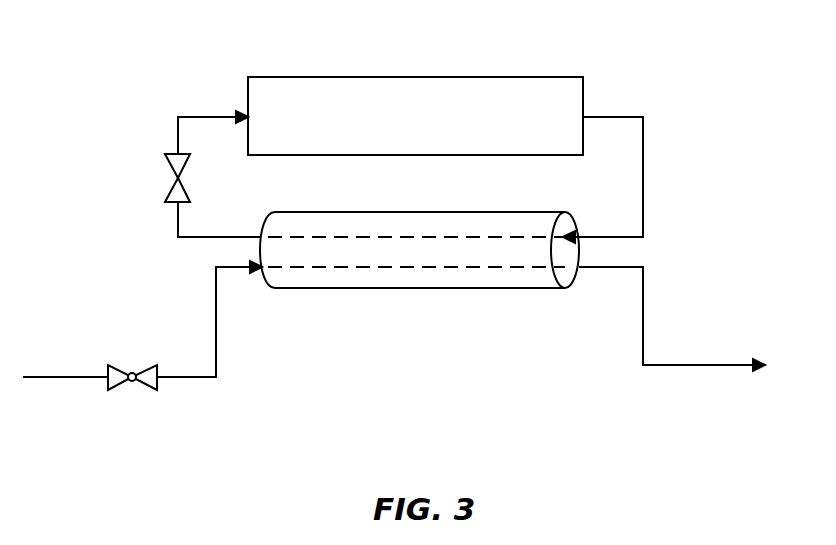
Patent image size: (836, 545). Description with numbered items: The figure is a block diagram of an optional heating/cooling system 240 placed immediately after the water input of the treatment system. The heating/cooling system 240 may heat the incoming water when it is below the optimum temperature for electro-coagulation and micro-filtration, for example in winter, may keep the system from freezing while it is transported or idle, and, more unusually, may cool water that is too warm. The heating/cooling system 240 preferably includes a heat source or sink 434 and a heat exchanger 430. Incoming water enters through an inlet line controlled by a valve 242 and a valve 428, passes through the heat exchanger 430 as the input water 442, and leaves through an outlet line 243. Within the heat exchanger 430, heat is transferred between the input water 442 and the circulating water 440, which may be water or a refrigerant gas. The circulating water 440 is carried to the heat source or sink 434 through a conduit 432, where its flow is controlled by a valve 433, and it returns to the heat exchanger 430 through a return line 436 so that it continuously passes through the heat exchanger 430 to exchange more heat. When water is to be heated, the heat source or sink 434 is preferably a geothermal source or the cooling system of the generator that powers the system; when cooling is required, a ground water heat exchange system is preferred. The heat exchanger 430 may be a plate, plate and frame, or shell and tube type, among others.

The heating/cooling system 240 is at (243, 408).
The valve 242 is at (60, 378).
The outlet line 243 is at (642, 307).
The valve 428 is at (128, 365).
The heat exchanger 430 is at (471, 212).
The conduit 432 is at (210, 117).
The valve 433 is at (167, 190).
The heat source or sink 434 is at (523, 77).
The return line 436 is at (643, 137).
The circulating water 440 is at (455, 238).
The input water 442 is at (390, 267).